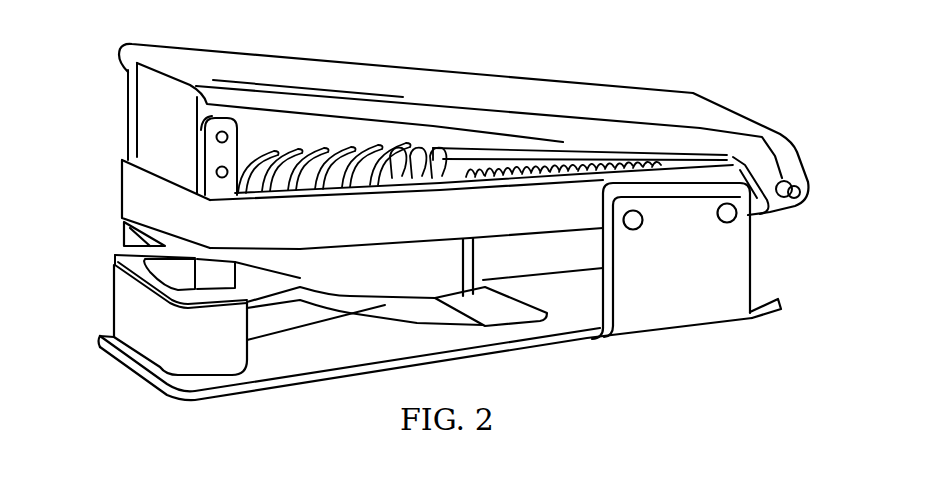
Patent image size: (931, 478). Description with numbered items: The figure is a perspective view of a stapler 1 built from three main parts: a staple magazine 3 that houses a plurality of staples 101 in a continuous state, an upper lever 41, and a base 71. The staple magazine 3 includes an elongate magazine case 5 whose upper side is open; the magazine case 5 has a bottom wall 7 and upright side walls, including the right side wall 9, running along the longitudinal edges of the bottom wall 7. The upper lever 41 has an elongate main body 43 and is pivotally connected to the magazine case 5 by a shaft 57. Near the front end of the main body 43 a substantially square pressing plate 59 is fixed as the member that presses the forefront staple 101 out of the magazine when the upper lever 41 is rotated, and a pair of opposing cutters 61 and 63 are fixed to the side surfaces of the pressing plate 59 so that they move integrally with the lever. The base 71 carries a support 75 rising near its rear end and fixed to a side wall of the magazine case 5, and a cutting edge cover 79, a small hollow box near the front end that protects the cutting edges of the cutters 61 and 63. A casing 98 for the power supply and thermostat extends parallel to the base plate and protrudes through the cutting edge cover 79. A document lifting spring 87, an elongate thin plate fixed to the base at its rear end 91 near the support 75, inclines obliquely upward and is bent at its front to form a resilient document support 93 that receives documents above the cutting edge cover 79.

The stapler 1 is at (736, 93).
The staple magazine 3 is at (110, 187).
The magazine case 5 is at (327, 240).
The bottom wall 7 is at (360, 250).
The right side wall 9 is at (300, 245).
The upper lever 41 is at (596, 80).
The main body 43 is at (512, 88).
The shaft 57 is at (797, 197).
The pressing plate 59 is at (153, 90).
The cutter 61 is at (205, 148).
The cutter 63 is at (130, 117).
The base 71 is at (487, 357).
The support 75 is at (660, 312).
The cutting edge cover 79 is at (195, 367).
The document lifting spring 87 is at (370, 312).
The rear end 91 is at (527, 320).
The document support 93 is at (115, 255).
The casing 98 is at (267, 338).
The staple 101 is at (300, 148).